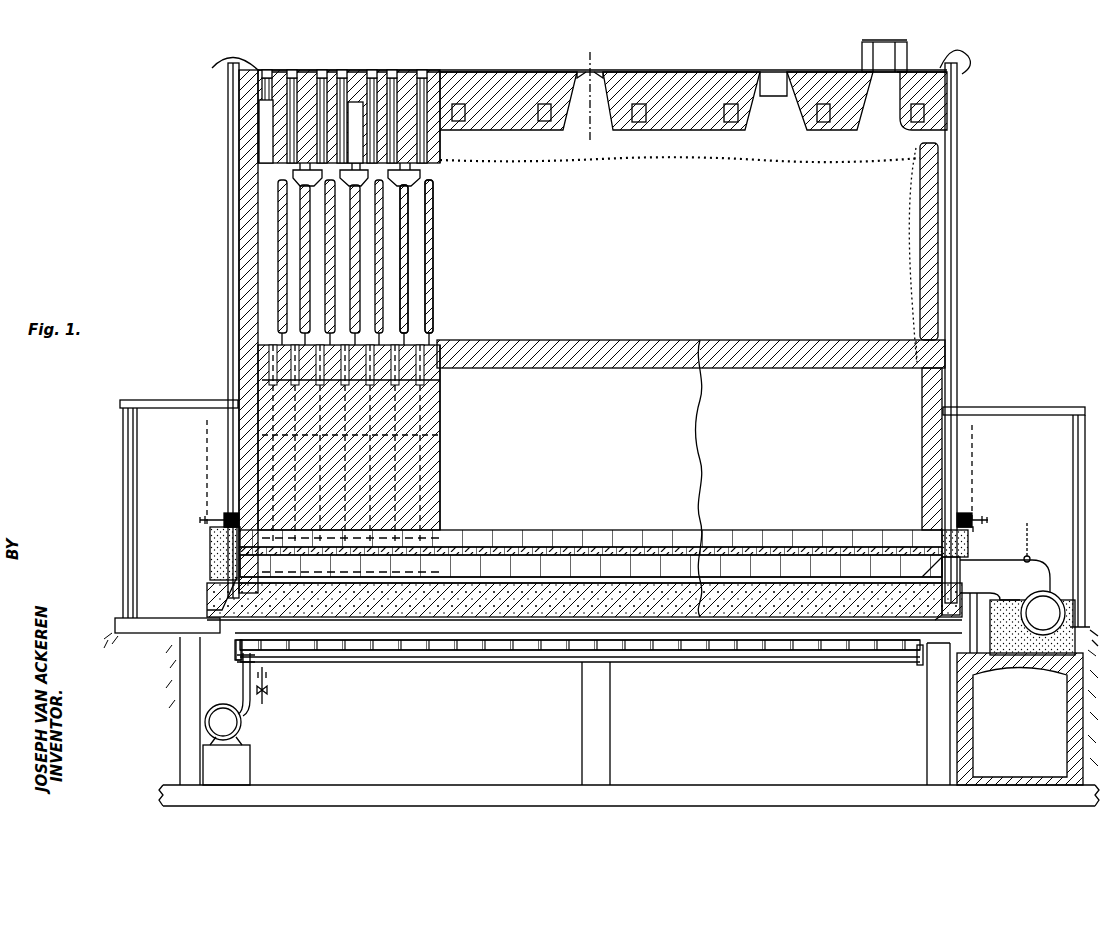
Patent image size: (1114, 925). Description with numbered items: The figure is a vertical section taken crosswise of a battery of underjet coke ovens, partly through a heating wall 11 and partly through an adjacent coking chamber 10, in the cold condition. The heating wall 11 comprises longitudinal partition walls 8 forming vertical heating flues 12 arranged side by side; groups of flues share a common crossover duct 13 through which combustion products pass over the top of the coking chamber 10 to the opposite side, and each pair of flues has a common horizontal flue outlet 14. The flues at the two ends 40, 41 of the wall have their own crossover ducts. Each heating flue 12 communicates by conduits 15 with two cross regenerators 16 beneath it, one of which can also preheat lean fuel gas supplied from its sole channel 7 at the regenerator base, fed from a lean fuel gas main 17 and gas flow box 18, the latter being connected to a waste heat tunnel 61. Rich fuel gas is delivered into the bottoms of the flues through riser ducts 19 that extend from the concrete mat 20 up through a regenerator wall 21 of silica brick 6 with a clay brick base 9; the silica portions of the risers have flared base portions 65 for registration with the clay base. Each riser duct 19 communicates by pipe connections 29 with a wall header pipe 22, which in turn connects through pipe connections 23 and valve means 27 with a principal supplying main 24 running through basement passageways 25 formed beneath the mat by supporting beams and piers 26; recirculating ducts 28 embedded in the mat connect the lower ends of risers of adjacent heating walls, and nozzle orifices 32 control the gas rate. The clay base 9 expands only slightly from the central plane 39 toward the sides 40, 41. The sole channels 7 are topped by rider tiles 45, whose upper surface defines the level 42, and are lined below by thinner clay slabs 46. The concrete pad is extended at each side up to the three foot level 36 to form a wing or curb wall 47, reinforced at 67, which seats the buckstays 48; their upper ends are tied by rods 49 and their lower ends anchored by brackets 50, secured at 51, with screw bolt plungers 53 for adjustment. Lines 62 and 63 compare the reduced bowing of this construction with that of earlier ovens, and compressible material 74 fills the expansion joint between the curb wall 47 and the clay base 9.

The silica brick 6 is at (698, 442).
The sole channel 7 is at (768, 566).
The longitudinal partition walls 8 is at (440, 285).
The clay brick base 9 is at (700, 566).
The coking chamber 10 is at (662, 251).
The heating wall 11 is at (395, 243).
The heating flue 12 is at (395, 294).
The crossover duct 13 is at (355, 136).
The horizontal flue outlet 14 is at (440, 167).
The conduits 15 is at (392, 380).
The cross regenerator 16 is at (620, 465).
The lean fuel gas main 17 is at (1046, 630).
The gas flow box 18 is at (1040, 563).
The ducts 19 is at (440, 436).
The concrete mat 20 is at (778, 606).
The regenerator wall 21 is at (440, 470).
The wall header pipe 22 is at (522, 655).
The pipe connections 23 is at (258, 713).
The principal supplying main 24 is at (233, 724).
The basement passageways 25 is at (472, 727).
The battery supporting beams and piers 26 is at (180, 739).
The valve means 27 is at (268, 677).
The recirculating ducts 28 is at (262, 645).
The pipe connections 29 is at (246, 640).
The discharge orifice 32 is at (408, 640).
The three foot level 36 is at (770, 530).
The longitudinal vertical central plane 39 is at (594, 92).
The end of heating wall 40 is at (256, 224).
The end of heating wall 41 is at (943, 238).
The top of sole channels 42 is at (620, 548).
The rider tiles 45 is at (548, 538).
The clay brick slabs 46 is at (560, 586).
The wing or curb wall 47 is at (212, 548).
The buckstays 48 is at (233, 128).
The rods 49 is at (228, 66).
The brackets 50 is at (228, 516).
The securing point 51 is at (234, 523).
The screw bolt plunger 53 is at (200, 519).
The waste heat tunnel 61 is at (975, 735).
The line of bowing 62 is at (222, 424).
The line of bowing 63 is at (215, 438).
The base portions of risers 65 is at (349, 439).
The reinforcements 67 is at (208, 581).
The compressible material 74 is at (224, 566).